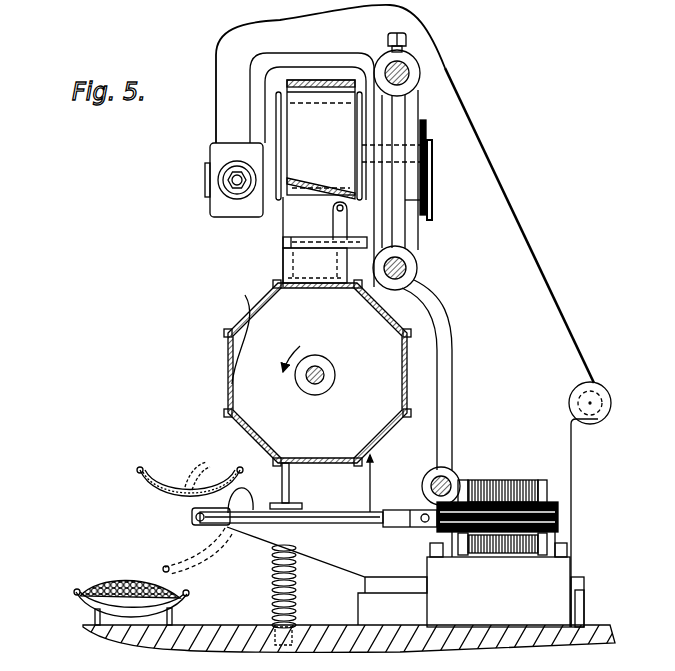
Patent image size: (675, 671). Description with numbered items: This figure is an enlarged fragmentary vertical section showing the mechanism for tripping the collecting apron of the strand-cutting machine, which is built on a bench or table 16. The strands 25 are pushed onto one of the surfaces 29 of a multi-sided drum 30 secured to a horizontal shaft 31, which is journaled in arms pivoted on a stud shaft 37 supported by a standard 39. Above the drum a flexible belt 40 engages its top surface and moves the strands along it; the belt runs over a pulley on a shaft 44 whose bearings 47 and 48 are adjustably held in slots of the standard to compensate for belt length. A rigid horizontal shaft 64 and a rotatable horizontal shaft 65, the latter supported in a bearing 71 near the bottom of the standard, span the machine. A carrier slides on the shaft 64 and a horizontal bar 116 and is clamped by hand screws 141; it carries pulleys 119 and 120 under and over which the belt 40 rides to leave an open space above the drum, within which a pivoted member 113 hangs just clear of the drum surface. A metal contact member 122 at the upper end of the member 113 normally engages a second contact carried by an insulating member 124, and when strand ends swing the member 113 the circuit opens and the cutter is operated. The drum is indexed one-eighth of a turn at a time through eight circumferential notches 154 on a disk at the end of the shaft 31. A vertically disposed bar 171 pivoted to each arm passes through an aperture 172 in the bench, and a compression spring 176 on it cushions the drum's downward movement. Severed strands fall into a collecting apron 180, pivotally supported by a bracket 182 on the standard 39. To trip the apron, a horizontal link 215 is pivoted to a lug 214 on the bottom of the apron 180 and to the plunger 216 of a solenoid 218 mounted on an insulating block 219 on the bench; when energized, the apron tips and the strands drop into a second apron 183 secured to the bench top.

The bench or table 16 is at (450, 642).
The strands 25 is at (322, 290).
The surfaces of the drum 29 is at (230, 384).
The multi-sided drum 30 is at (226, 345).
The horizontal shaft 31 is at (322, 378).
The stud shaft 37 is at (597, 415).
The standard 39 is at (552, 292).
The flexible belt 40 is at (305, 80).
The shaft 44 is at (212, 178).
The bearing 47 is at (212, 200).
The bearing 48 is at (432, 162).
The horizontal shaft 64 is at (405, 72).
The horizontal shaft 65 is at (450, 477).
The bearing 71 is at (425, 472).
The pivoted member 113 is at (290, 242).
The horizontal bar 116 is at (414, 268).
The pulley 119 is at (278, 96).
The pulley 120 is at (284, 266).
The metal contact member 122 is at (344, 212).
The insulating member 124 is at (404, 202).
The hand screws 141 is at (400, 34).
The circumferential notches 154 is at (322, 665).
The vertically disposed bar 171 is at (290, 496).
The aperture 172 is at (350, 618).
The compression spring 176 is at (318, 590).
The collecting apron 180 is at (158, 450).
The bracket 182 is at (268, 538).
The second apron 183 is at (90, 608).
The lug 214 is at (194, 518).
The horizontal link 215 is at (322, 525).
The plunger 216 is at (434, 528).
The solenoid 218 is at (542, 497).
The insulating block 219 is at (556, 583).